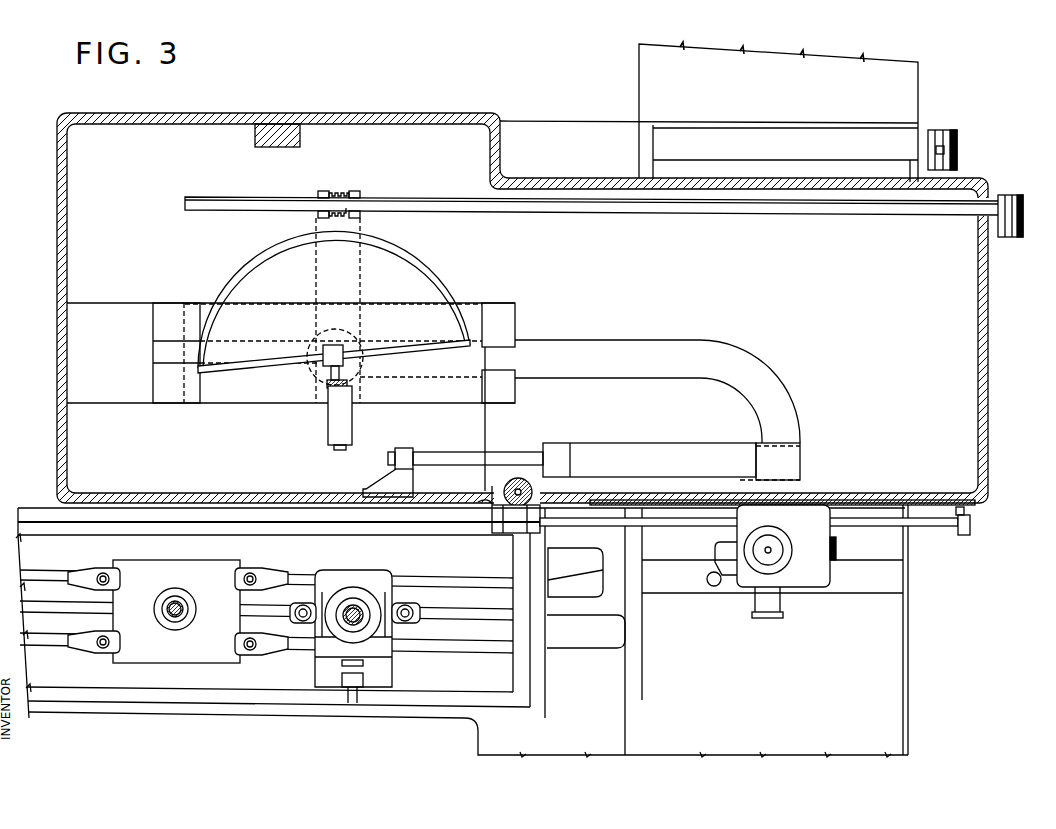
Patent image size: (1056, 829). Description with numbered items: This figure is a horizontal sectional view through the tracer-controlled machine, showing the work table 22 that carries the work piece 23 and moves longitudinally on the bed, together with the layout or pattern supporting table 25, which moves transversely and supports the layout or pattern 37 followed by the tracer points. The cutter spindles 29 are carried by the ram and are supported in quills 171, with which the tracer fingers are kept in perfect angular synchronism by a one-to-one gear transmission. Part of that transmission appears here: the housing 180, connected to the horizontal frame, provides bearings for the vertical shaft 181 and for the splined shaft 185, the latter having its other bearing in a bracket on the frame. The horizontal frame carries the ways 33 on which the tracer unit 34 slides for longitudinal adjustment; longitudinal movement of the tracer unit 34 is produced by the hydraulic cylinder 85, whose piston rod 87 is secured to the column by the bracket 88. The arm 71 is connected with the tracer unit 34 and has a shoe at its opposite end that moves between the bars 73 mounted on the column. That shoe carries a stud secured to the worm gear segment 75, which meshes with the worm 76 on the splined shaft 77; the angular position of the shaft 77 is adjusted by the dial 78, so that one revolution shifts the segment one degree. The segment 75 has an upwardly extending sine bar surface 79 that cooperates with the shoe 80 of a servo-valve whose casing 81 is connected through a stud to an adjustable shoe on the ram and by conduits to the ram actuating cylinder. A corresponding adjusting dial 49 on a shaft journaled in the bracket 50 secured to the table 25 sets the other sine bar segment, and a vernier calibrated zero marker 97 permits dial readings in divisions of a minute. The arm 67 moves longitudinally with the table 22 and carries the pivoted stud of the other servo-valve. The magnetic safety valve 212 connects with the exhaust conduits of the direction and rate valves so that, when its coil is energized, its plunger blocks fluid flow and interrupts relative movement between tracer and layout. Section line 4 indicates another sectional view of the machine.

The section line 4- 4 is at (80, 350).
The table 22 is at (30, 512).
The work piece 23 is at (135, 569).
The layout or pattern supporting table 25 is at (893, 589).
The cutter spindle 29 is at (165, 620).
The ways 33 is at (913, 497).
The tracer unit 34 is at (817, 534).
The layout or pattern 37 is at (893, 554).
The adjusting dial 49 is at (953, 124).
The bracket 50 is at (925, 133).
The arm 67 is at (590, 563).
The arm 71 is at (580, 345).
The bars 73 is at (195, 312).
The worm gear segment 75 is at (410, 275).
The worm 76 is at (346, 191).
The splined shaft 77 is at (421, 207).
The dial 78 is at (1005, 193).
The sine bar surface 79 is at (273, 362).
The shoe 80 is at (343, 351).
The casing 81 is at (334, 421).
The hydraulic cylinder 85 is at (660, 452).
The piston rod 87 is at (452, 455).
The bracket 88 is at (405, 481).
The vernier calibrated zero marker 97 is at (947, 150).
The quill 171 is at (185, 598).
The housing 180 is at (527, 522).
The vertical shaft 181 is at (508, 524).
The splined shaft 185 is at (660, 521).
The magnetic safety valve 212 is at (771, 546).